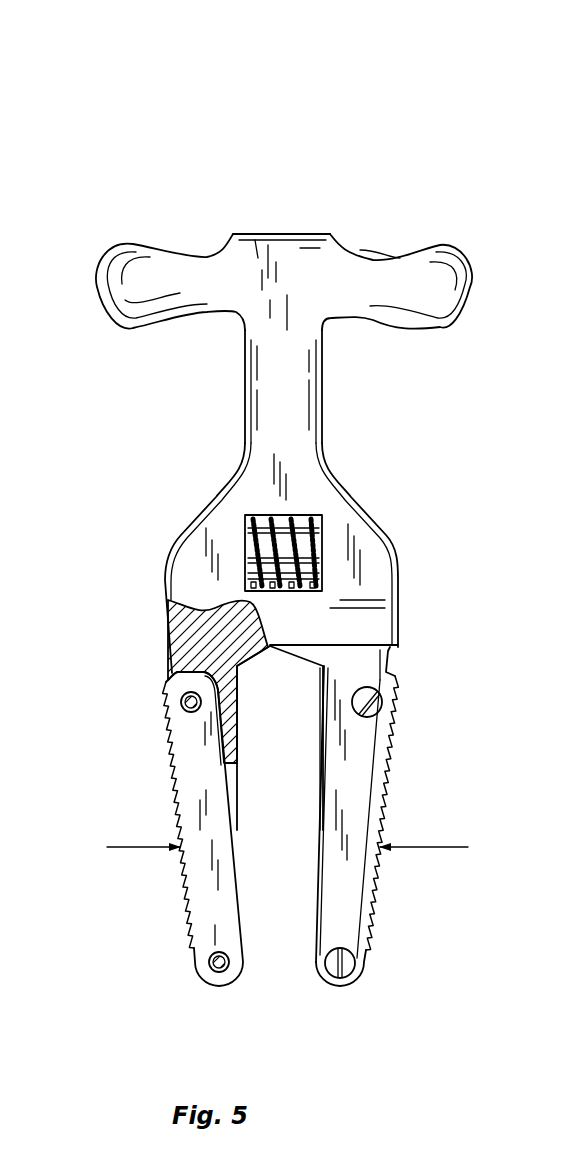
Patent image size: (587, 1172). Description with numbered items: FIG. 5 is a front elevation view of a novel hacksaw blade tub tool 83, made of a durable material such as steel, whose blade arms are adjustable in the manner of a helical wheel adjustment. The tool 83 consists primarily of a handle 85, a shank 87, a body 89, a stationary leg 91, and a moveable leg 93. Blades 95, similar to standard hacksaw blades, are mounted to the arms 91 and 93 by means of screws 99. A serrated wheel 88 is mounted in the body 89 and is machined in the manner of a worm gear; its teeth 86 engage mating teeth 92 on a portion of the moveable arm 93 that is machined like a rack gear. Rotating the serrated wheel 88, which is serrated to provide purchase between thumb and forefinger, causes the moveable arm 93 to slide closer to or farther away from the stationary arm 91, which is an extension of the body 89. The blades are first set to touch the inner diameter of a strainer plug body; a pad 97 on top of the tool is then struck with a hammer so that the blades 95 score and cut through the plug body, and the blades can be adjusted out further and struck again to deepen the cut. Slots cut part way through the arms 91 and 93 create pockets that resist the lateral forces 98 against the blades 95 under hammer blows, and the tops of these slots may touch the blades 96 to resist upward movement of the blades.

The tool 83 is at (358, 87).
The handle 85 is at (455, 253).
The pad 97 is at (270, 232).
The shank 87 is at (322, 393).
The body 89 is at (390, 540).
The mating teeth 92 is at (313, 593).
The serrated wheel 88 is at (247, 547).
The teeth 86 is at (300, 525).
The blades 96 is at (173, 673).
The stationary leg 91 is at (225, 738).
The moveable leg 93 is at (322, 852).
The blades 95 is at (173, 795).
The screws 99 is at (181, 702).
The lateral forces 98 is at (132, 847).